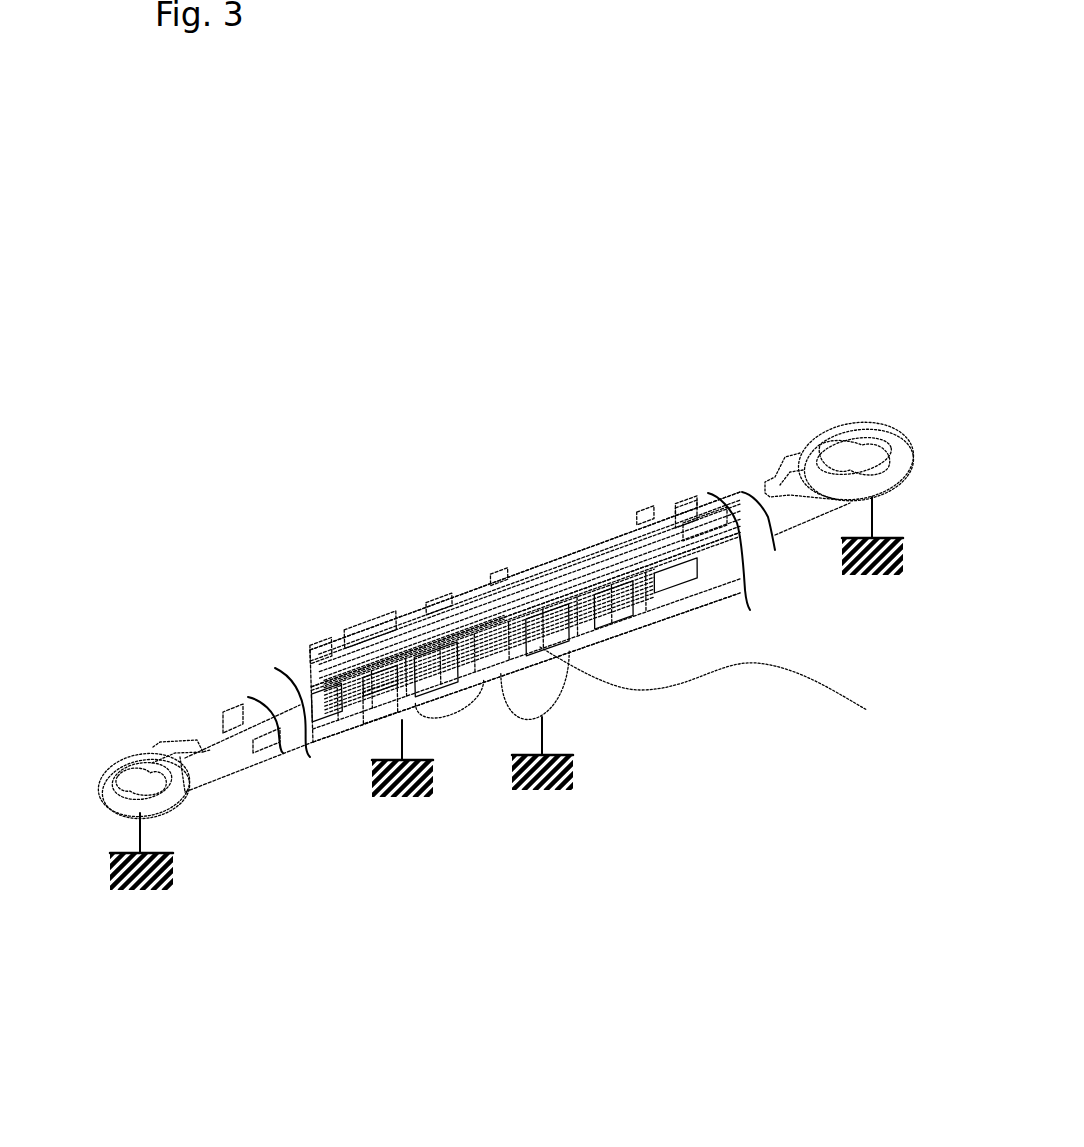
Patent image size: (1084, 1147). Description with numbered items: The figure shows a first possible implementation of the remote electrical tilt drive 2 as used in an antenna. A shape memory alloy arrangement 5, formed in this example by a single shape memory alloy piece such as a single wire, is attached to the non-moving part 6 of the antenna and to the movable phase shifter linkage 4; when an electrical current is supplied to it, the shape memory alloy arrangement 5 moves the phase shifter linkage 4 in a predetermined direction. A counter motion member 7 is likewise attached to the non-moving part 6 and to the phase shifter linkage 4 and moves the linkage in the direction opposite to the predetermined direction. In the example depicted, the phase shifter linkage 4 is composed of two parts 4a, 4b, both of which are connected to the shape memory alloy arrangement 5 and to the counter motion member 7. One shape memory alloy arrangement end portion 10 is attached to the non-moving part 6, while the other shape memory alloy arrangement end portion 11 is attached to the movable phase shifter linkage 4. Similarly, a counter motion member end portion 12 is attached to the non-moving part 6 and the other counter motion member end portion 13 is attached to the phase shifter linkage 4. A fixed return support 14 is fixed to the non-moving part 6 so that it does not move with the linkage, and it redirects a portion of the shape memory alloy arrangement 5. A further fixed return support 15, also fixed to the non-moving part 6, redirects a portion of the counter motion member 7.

The remote electrical tilt drive 2 is at (517, 230).
The movable phase shifter linkage 4 is at (320, 690).
The first part of the phase shifter linkage 4a is at (483, 590).
The second part of the phase shifter linkage 4b is at (526, 667).
The shape memory alloy arrangement 5 is at (325, 690).
The non-moving part of the antenna 6 is at (133, 840).
The counter motion member 7 is at (695, 523).
The shape memory alloy arrangement end portion 10 is at (382, 727).
The shape memory alloy arrangement end portion 11 is at (357, 672).
The counter motion member end portion 12 is at (478, 680).
The counter motion member end portion 13 is at (418, 645).
The fixed return support 14 is at (125, 760).
The further fixed return support 15 is at (846, 443).